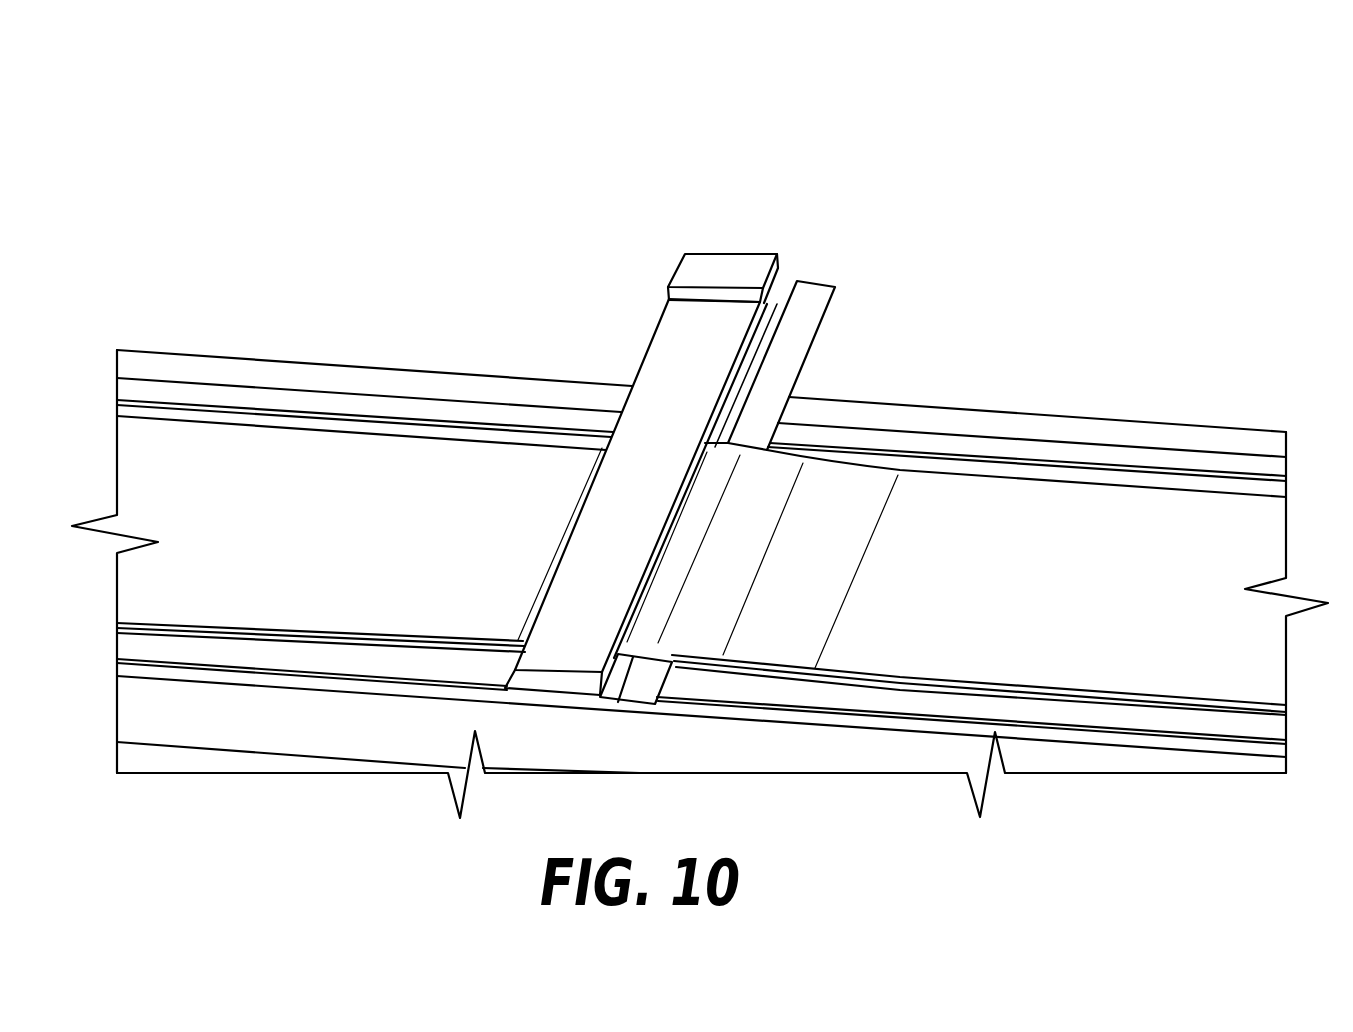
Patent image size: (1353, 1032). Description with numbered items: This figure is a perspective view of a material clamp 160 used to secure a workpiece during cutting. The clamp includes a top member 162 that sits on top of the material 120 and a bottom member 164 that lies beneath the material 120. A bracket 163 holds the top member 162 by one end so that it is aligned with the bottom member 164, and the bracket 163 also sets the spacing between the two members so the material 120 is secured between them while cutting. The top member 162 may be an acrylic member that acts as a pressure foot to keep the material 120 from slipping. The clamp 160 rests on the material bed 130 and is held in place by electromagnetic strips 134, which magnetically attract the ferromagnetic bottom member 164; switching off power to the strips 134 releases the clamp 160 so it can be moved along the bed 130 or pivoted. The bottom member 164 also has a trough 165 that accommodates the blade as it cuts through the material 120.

The material 120 is at (1052, 505).
The material bed 130 is at (1192, 433).
The electromagnetic strips 134 is at (963, 445).
The material clamp 160 is at (709, 373).
The top member 162 is at (667, 344).
The bracket 163 is at (696, 265).
The bottom member 164 is at (800, 323).
The trough 165 is at (790, 270).